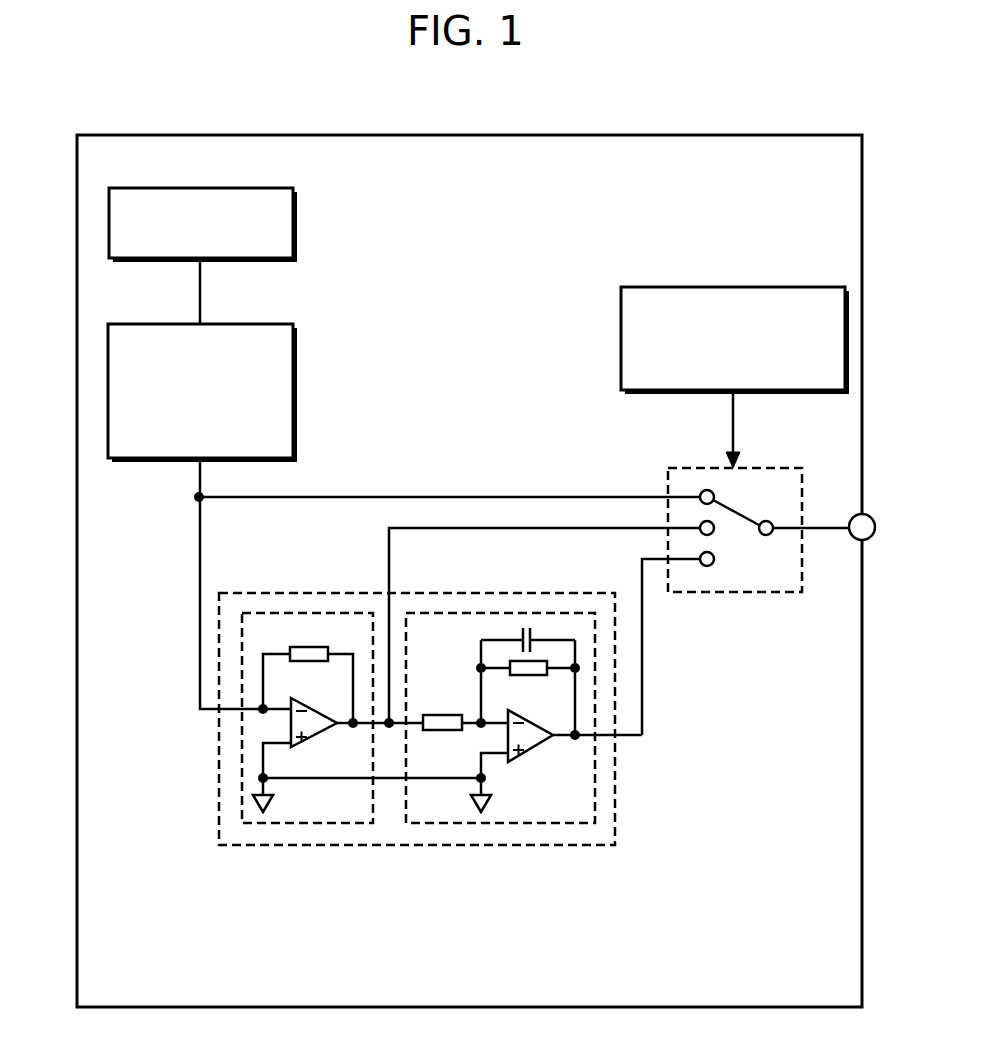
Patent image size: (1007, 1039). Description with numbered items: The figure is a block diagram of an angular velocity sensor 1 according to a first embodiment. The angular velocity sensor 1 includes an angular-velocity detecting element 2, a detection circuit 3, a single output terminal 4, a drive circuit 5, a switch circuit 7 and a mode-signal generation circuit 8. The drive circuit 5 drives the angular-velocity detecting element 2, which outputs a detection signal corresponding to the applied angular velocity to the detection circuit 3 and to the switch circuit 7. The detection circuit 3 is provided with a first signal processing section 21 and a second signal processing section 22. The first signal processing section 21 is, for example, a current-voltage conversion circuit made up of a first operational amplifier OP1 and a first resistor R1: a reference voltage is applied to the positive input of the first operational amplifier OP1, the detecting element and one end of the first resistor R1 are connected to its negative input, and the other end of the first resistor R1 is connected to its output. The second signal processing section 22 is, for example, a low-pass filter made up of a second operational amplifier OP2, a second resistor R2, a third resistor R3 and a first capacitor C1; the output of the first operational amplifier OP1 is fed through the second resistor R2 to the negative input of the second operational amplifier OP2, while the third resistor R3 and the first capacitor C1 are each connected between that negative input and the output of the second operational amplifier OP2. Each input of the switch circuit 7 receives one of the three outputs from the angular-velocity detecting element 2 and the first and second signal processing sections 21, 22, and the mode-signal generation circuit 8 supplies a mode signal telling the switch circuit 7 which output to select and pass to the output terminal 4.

The angular velocity sensor 1 is at (763, 135).
The angular-velocity detecting element 2 is at (228, 324).
The detection circuit 3 is at (462, 592).
The output terminal 4 is at (868, 516).
The drive circuit 5 is at (228, 188).
The switch circuit 7 is at (763, 468).
The mode-signal generation circuit 8 is at (765, 287).
The first signal processing section 21 is at (332, 759).
The second signal processing section 22 is at (524, 759).
The first resistor R1 is at (316, 662).
The second resistor R2 is at (438, 712).
The third resistor R3 is at (530, 676).
The first capacitor C1 is at (519, 634).
The first operational amplifier OP1 is at (329, 736).
The second operational amplifier OP2 is at (528, 748).